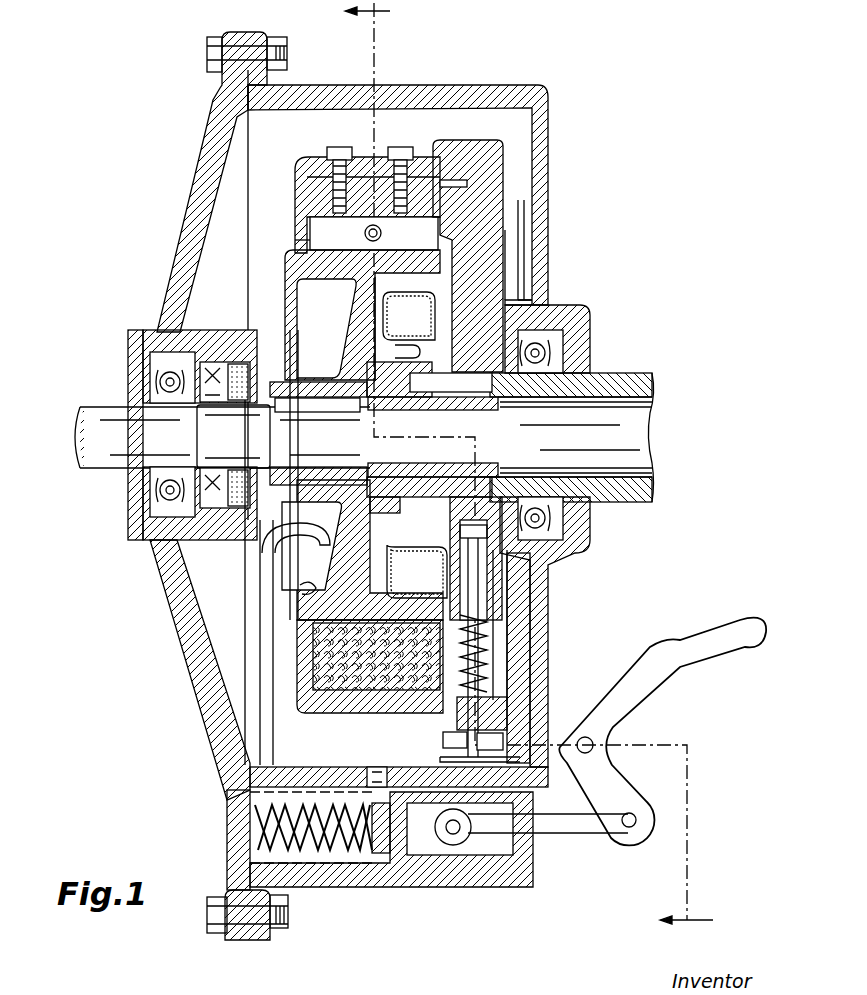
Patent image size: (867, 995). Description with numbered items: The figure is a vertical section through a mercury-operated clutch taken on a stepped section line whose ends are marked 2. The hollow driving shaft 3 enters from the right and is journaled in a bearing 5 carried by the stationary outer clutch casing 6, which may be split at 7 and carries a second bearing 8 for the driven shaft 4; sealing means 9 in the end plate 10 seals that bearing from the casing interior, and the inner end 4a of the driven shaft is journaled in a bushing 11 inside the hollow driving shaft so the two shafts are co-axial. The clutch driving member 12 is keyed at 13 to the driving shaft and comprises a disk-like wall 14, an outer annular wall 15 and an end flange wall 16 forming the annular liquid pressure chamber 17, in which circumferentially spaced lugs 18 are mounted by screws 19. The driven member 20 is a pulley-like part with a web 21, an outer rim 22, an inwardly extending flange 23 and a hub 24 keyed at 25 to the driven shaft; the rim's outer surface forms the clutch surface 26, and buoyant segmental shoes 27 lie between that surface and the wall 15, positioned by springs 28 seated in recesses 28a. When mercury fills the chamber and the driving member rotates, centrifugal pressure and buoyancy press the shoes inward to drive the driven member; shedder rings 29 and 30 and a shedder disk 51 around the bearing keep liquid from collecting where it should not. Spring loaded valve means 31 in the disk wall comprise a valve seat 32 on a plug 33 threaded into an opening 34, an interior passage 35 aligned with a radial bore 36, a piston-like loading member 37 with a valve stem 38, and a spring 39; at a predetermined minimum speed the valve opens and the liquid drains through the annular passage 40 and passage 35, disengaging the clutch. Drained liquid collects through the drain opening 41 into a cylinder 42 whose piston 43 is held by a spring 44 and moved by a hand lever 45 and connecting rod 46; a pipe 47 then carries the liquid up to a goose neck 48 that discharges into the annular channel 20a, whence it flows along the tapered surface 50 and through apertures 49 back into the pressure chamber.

The section line 2- 2 is at (529, 478).
The driving shaft 3 is at (635, 378).
The driven shaft 4 is at (98, 435).
The inner end of the driven shaft 4a is at (493, 440).
The bearing 5 is at (582, 320).
The outer clutch casing 6 is at (545, 252).
The split 7 is at (250, 940).
The bearing 8 is at (150, 503).
The sealing means 9 is at (222, 497).
The end plate 10 is at (177, 262).
The bushing 11 is at (495, 470).
The clutch driving member 12 is at (540, 182).
The key 13 is at (429, 437).
The disk-like wall 14 is at (510, 232).
The outer annular wall 15 is at (483, 130).
The end flange wall 16 is at (300, 188).
The liquid drive or pressure chamber 17 is at (340, 690).
The lugs 18 is at (360, 196).
The screws 19 is at (338, 148).
The driven member 20 is at (277, 274).
The annular channel 20a is at (292, 583).
The web 21 is at (366, 311).
The outer peripheral rim 22 is at (303, 265).
The inwardly extending flange 23 is at (290, 300).
The hub 24 is at (280, 382).
The key 25 is at (317, 405).
The clutch surface 26 is at (305, 245).
The segmental members or clutch shoes 27 is at (387, 660).
The springs 28 is at (364, 235).
The recesses 28a is at (382, 236).
The shedder ring 29 is at (433, 300).
The shedder ring 30 is at (412, 350).
The spring loaded valve means 31 is at (495, 683).
The valve seat 32 is at (460, 700).
The plug 33 is at (490, 732).
The threaded opening 34 is at (445, 735).
The interior passage 35 is at (452, 748).
The bore 36 is at (470, 640).
The valve loading or piston-like member 37 is at (480, 562).
The valve stem 38 is at (510, 660).
The spring 39 is at (500, 618).
The annular passage 40 is at (456, 184).
The drain opening 41 is at (372, 775).
The cylinder 42 is at (355, 860).
The piston 43 is at (445, 862).
The spring 44 is at (315, 842).
The hand lever 45 is at (658, 676).
The connecting rod 46 is at (572, 826).
The pipe 47 is at (265, 720).
The goose neck 48 is at (272, 540).
The apertures 49 is at (305, 590).
The interior tapered surface 50 is at (262, 660).
The shedder disk 51 is at (548, 240).